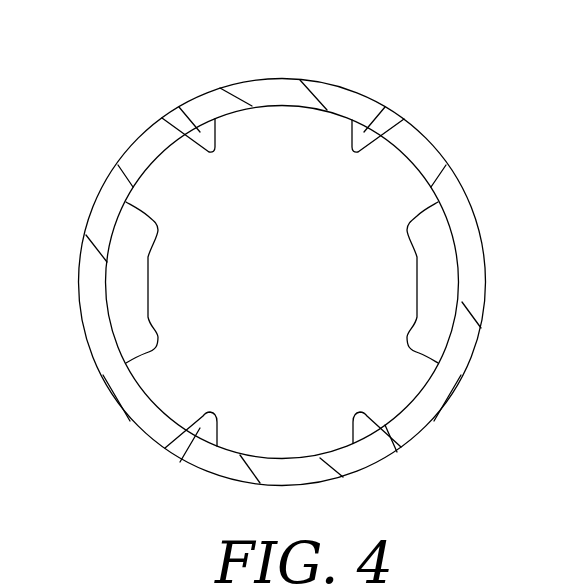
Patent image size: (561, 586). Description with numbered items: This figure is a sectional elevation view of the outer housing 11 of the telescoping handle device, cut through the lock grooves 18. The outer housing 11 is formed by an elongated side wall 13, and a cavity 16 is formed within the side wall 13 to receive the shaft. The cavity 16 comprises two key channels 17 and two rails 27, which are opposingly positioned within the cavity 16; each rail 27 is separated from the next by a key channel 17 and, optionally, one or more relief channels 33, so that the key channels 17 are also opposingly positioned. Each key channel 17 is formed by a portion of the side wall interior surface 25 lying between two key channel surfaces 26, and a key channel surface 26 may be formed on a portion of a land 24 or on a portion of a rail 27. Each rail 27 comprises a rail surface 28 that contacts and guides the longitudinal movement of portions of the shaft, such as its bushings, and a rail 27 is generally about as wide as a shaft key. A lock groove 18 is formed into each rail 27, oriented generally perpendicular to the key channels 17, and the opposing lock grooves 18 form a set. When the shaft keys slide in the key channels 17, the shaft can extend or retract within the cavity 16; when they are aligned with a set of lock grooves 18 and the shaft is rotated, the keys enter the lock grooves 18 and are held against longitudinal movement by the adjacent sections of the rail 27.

The outer housing 11 is at (97, 66).
The side wall 13 is at (413, 153).
The cavity 16 is at (288, 288).
The key channel 17 is at (270, 115).
The lock groove 18 is at (144, 248).
The land 24 is at (179, 107).
The side wall interior surface 25 is at (298, 118).
The key channel surface 26 is at (230, 128).
The rail 27 is at (122, 298).
The rail surface 28 is at (162, 271).
The relief channel 33 is at (167, 168).